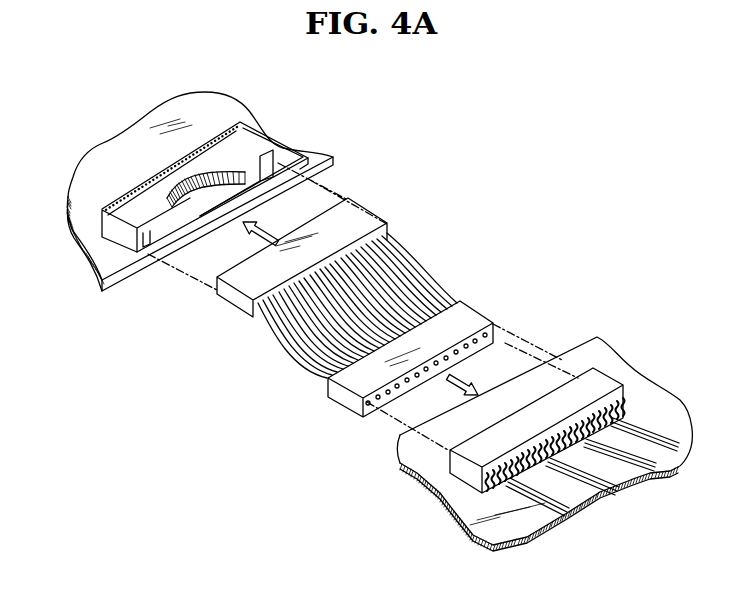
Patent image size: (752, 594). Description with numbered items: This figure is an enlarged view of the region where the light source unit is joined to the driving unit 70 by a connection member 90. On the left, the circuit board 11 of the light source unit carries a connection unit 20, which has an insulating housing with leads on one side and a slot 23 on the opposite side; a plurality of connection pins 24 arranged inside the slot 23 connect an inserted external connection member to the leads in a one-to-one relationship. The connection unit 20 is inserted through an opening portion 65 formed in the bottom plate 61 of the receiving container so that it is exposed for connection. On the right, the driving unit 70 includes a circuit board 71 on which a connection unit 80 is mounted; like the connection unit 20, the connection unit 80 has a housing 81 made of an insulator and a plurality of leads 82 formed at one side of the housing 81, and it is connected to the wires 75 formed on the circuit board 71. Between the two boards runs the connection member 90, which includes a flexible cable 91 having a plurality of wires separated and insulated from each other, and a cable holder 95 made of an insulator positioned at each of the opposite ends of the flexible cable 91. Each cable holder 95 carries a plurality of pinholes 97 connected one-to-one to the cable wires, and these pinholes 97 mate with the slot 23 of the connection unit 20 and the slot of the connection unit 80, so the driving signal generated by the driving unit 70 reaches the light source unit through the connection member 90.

The circuit board 11 is at (283, 160).
The connection unit 20 is at (255, 130).
The slot 23 is at (157, 232).
The connection pins 24 is at (190, 208).
The bottom plate 61 is at (207, 105).
The opening portion 65 is at (83, 212).
The driving unit 70 is at (561, 448).
The circuit board 71 is at (677, 398).
The wires 75 is at (675, 440).
The connection unit 80 is at (533, 454).
The housing 81 is at (480, 455).
The leads 82 is at (500, 493).
The connection member 90 is at (377, 297).
The flexible cable 91 is at (410, 268).
The cable holder 95 is at (375, 218).
The pinholes 97 is at (487, 333).